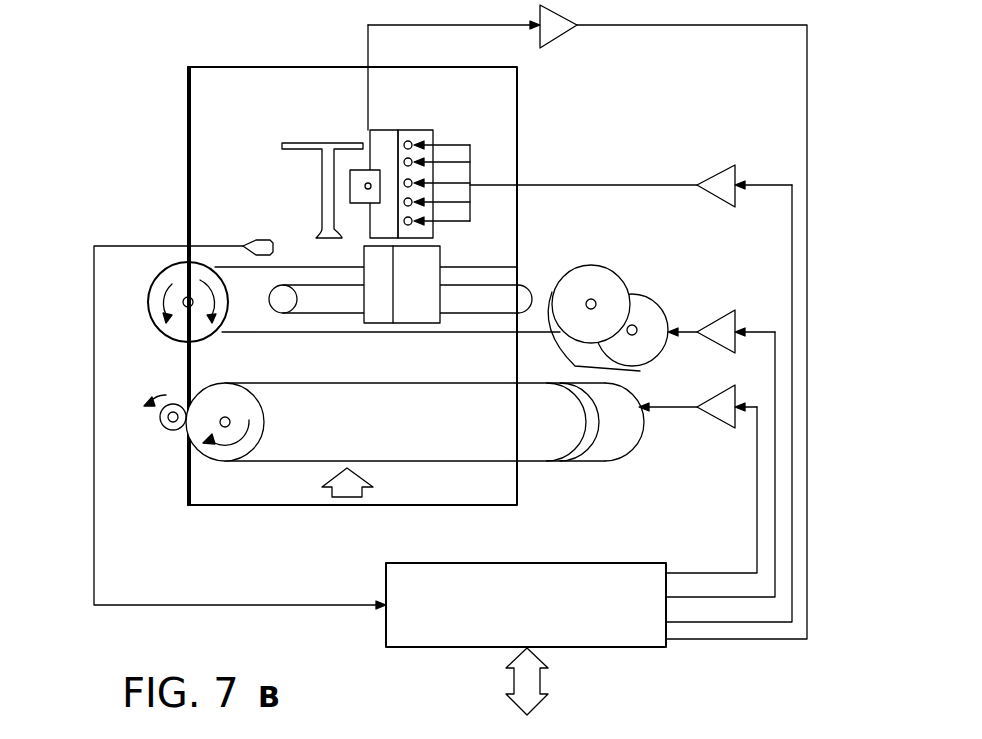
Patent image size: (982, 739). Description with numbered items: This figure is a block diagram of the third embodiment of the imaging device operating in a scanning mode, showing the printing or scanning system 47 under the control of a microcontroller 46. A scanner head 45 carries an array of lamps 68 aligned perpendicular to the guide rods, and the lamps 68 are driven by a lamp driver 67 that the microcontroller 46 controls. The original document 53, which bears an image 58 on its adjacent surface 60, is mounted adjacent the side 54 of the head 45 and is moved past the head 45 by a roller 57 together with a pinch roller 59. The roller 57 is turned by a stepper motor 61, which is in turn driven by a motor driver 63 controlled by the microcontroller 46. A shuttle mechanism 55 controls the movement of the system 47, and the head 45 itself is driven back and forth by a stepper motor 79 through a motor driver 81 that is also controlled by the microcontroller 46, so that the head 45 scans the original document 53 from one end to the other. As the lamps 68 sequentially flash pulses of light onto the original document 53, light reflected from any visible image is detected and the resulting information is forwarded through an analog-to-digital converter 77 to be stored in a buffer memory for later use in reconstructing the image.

The scanner head 45 is at (385, 130).
The microcontroller 46 is at (392, 632).
The printing or scanning system 47 is at (178, 617).
The original document 53 is at (224, 82).
The side of the head 54 is at (434, 133).
The shuttle mechanism 55 is at (292, 325).
The roller 57 is at (427, 452).
The image 58 is at (283, 152).
The pinch roller 59 is at (165, 425).
The adjacent surface 60 is at (200, 190).
The stepper motor 61 is at (605, 453).
The motor driver 63 is at (718, 415).
The lamp driver 67 is at (718, 175).
The array of lamps 68 is at (415, 131).
The analog-to-digital converter 77 is at (556, 28).
The stepper motor 79 is at (595, 275).
The motor driver 81 is at (710, 325).